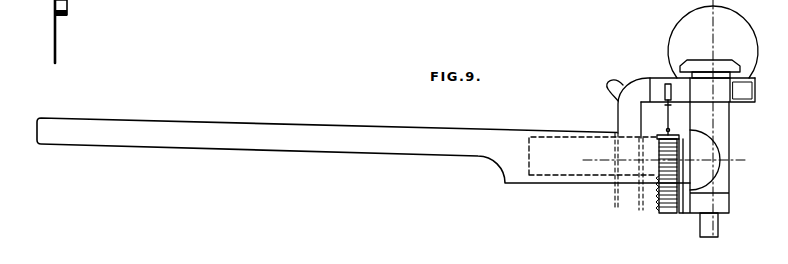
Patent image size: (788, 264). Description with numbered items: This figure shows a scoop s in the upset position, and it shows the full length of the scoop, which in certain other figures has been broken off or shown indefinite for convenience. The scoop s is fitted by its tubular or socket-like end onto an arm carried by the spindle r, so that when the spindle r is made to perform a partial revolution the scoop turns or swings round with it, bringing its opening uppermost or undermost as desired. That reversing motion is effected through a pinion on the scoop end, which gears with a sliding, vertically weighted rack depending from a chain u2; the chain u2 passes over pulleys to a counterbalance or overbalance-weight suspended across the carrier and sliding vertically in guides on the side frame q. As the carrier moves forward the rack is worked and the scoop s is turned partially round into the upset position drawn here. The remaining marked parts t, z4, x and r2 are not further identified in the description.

The scoop s is at (363, 150).
The hidden slot in arm t is at (590, 156).
The side frame q is at (681, 108).
The cap nut z4 is at (710, 64).
The ball handle x is at (740, 26).
The chain u2 is at (672, 109).
The spindle r is at (706, 169).
The half disk r2 is at (704, 160).